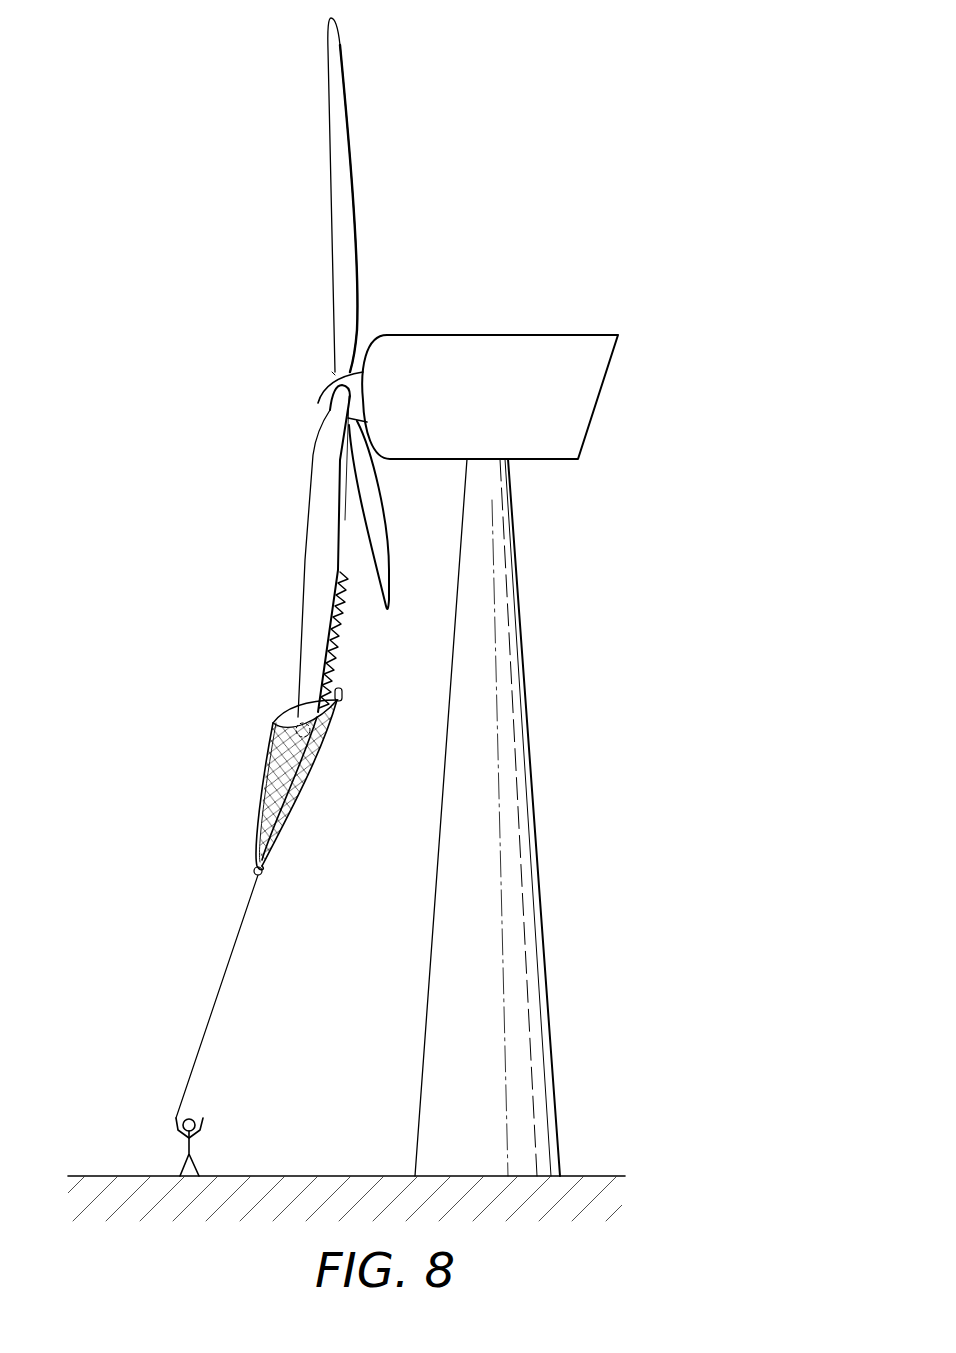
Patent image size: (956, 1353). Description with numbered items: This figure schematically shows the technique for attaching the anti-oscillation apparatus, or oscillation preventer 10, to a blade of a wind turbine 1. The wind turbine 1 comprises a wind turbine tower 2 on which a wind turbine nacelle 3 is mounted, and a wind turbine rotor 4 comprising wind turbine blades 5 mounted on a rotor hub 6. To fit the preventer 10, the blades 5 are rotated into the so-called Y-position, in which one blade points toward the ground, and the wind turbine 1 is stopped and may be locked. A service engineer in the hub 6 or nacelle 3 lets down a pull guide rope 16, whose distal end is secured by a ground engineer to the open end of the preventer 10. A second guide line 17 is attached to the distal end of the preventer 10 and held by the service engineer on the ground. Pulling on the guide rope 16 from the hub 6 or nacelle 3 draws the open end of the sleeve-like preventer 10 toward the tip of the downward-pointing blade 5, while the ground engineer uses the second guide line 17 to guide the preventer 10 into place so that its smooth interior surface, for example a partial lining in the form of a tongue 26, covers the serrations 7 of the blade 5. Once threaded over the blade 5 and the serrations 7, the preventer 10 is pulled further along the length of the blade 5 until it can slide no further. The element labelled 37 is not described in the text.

The wind turbine 1 is at (646, 974).
The wind turbine tower 2 is at (533, 783).
The wind turbine nacelle 3 is at (594, 334).
The wind turbine rotor 4 is at (546, 147).
The wind turbine blade 5 is at (327, 182).
The rotor hub 6 is at (318, 401).
The serrations 7 is at (343, 646).
The oscillation preventer 10 is at (240, 832).
The pull guide rope 16 is at (335, 448).
The second guide line 17 is at (222, 982).
The tongue 26 is at (290, 822).
The mesh net 37 is at (311, 778).